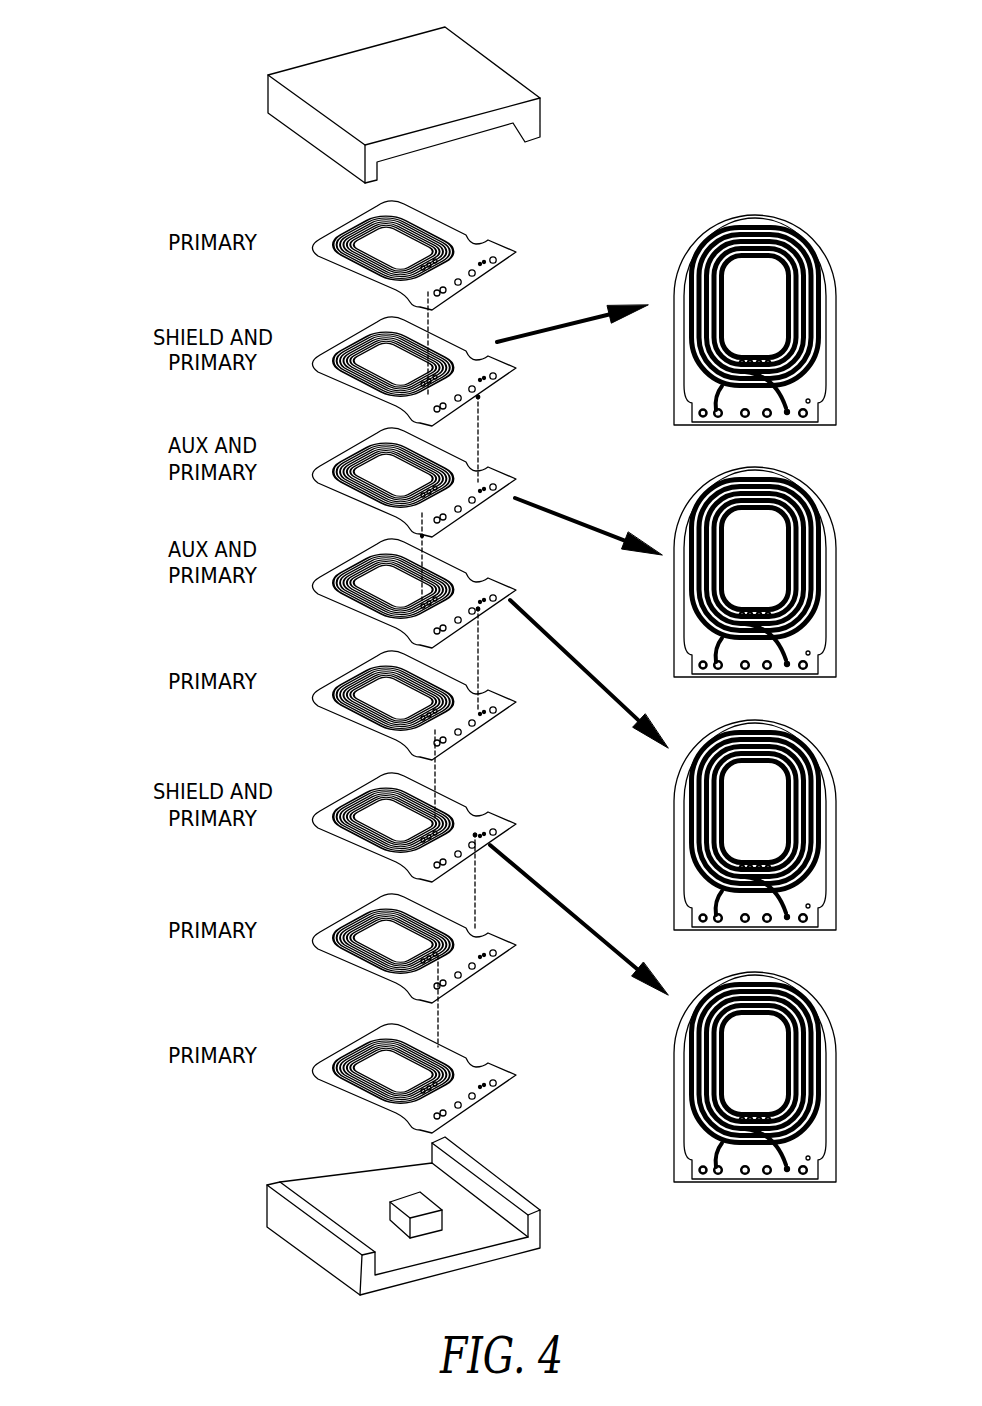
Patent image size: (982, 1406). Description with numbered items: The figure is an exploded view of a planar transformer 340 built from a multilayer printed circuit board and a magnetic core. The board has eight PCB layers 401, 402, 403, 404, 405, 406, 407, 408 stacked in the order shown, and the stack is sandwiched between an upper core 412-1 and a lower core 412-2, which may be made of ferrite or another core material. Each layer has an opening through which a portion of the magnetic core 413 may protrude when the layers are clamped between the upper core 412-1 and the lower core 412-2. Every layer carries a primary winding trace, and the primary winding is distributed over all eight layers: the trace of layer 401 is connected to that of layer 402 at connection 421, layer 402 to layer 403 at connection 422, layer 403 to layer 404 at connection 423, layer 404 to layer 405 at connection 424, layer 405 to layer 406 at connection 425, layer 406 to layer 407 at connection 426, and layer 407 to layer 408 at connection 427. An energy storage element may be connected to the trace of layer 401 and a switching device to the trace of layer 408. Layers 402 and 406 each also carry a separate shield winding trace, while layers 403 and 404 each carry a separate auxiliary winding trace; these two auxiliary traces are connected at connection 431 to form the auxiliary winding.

The planar transformer 340 is at (186, 30).
The PCB layer 401 is at (482, 238).
The PCB layer 402 is at (505, 378).
The PCB layer 403 is at (502, 473).
The PCB layer 404 is at (503, 584).
The PCB layer 405 is at (507, 706).
The PCB layer 406 is at (503, 813).
The PCB layer 407 is at (495, 961).
The PCB layer 408 is at (505, 1070).
The upper core 412-1 is at (532, 113).
The lower core 412-2 is at (535, 1228).
The portion of the magnetic core 413 is at (423, 1223).
The electrical connection 421 is at (430, 318).
The electrical connection 422 is at (480, 427).
The electrical connection 423 is at (433, 546).
The electrical connection 424 is at (480, 653).
The electrical connection 425 is at (437, 776).
The electrical connection 426 is at (478, 886).
The electrical connection 427 is at (438, 1022).
The electrical connection 431 is at (421, 536).